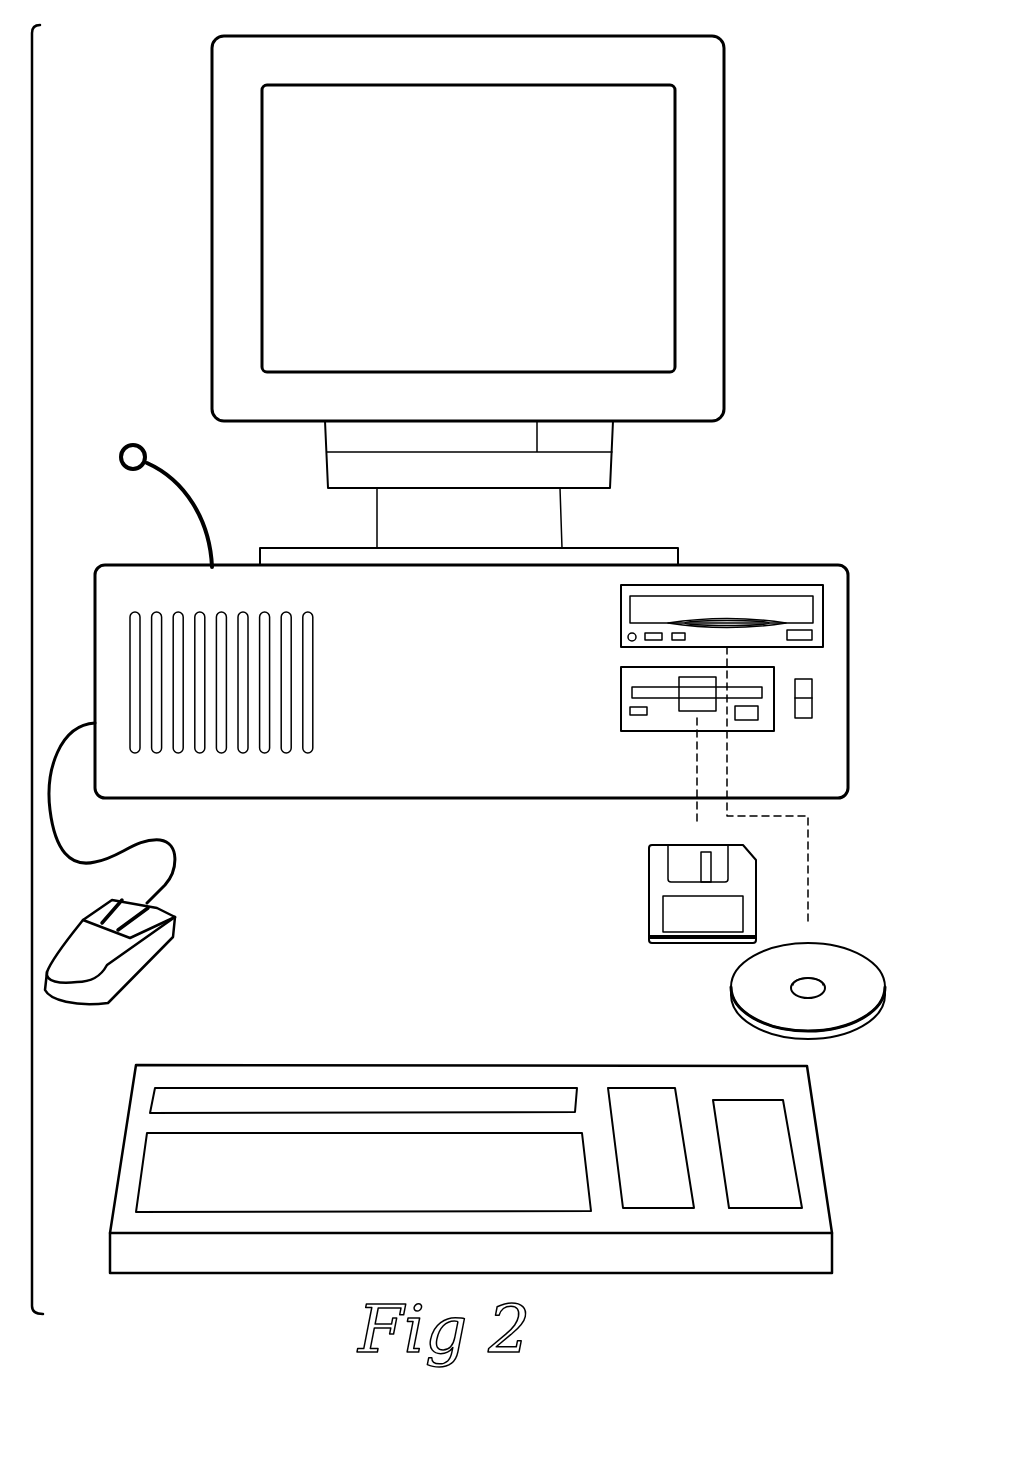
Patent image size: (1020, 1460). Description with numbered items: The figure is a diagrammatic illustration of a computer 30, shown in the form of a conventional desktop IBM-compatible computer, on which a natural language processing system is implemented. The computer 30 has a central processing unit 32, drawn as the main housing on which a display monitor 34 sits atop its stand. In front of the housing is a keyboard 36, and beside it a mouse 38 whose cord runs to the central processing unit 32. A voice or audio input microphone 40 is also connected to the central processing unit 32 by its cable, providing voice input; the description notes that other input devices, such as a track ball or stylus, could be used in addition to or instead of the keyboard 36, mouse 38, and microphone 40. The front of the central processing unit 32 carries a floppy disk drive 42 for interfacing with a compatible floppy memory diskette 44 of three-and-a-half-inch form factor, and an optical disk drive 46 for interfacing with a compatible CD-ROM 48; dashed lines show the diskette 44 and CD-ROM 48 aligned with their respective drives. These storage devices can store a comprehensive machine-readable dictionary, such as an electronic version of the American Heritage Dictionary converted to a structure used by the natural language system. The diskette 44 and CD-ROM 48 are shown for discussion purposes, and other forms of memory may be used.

The computer 30 is at (776, 104).
The central processing unit 32 is at (848, 622).
The display monitor 34 is at (713, 308).
The keyboard 36 is at (508, 1072).
The mouse 38 is at (162, 943).
The voice or audio input microphone 40 is at (135, 448).
The floppy disk drive 42 is at (628, 702).
The floppy memory diskette 44 is at (658, 880).
The optical disk drive 46 is at (633, 608).
The CD-ROM 48 is at (752, 988).